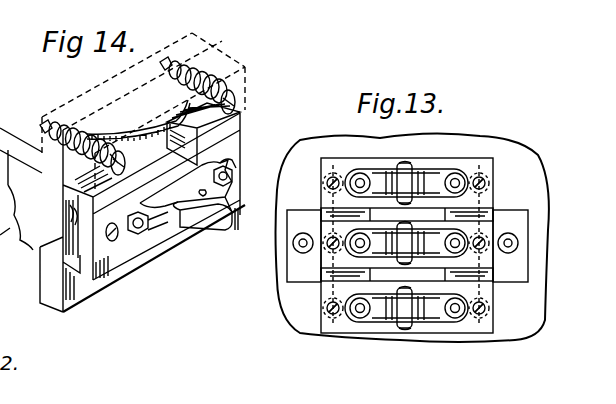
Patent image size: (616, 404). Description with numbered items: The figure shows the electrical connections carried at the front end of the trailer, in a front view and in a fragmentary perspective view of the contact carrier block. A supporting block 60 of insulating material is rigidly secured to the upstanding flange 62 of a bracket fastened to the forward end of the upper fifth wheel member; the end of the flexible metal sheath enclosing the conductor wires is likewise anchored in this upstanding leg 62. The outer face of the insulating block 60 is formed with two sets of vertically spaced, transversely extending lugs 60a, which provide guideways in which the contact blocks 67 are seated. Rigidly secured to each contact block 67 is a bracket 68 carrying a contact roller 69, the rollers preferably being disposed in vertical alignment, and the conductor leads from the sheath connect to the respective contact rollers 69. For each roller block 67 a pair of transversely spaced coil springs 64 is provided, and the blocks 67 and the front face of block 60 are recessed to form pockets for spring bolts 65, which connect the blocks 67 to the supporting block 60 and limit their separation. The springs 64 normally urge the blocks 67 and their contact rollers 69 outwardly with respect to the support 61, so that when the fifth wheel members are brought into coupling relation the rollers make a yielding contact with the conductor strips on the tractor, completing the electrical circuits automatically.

In FIG. 13, the supporting block 60 is at (497, 216).
In FIG. 14, the supporting block 60 is at (50, 233).
In FIG. 13, the lugs 60a is at (332, 215).
In FIG. 14, the support 61 is at (157, 148).
In FIG. 13, the upstanding flange 62 is at (537, 203).
In FIG. 13, the coil springs 64 is at (320, 172).
In FIG. 14, the coil springs 64 is at (68, 125).
In FIG. 13, the spring bolts 65 is at (333, 180).
In FIG. 14, the spring bolts 65 is at (74, 177).
In FIG. 13, the contact blocks 67 is at (492, 160).
In FIG. 14, the contact blocks 67 is at (103, 248).
In FIG. 13, the brackets 68 is at (435, 180).
In FIG. 14, the brackets 68 is at (172, 228).
In FIG. 13, the contact rollers 69 is at (420, 180).
In FIG. 14, the contact rollers 69 is at (207, 230).